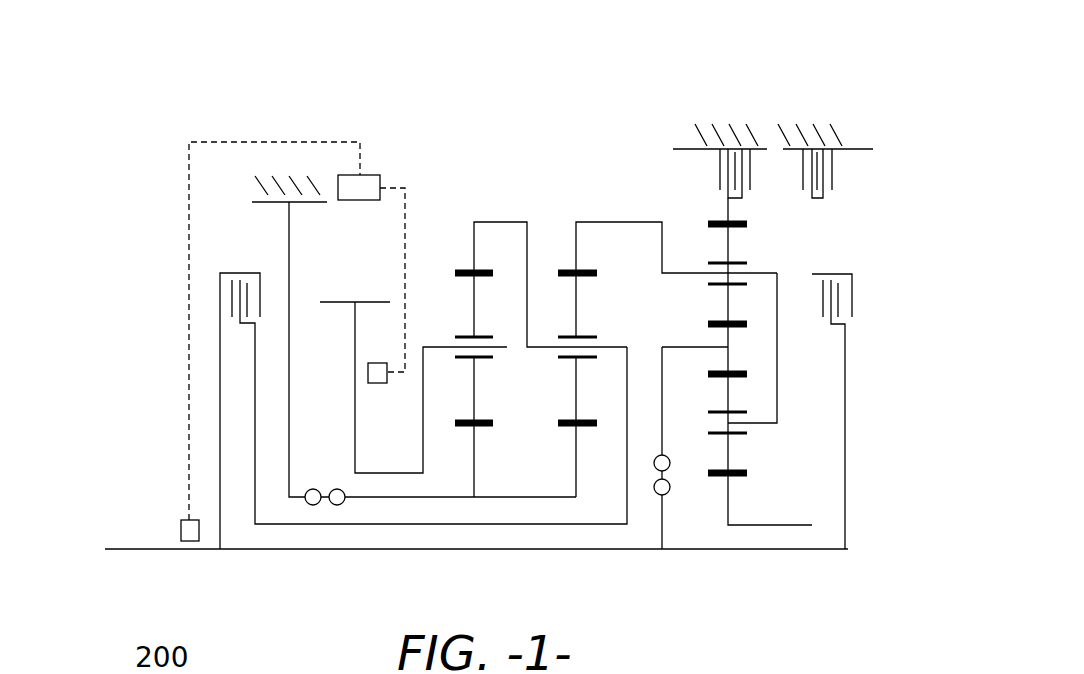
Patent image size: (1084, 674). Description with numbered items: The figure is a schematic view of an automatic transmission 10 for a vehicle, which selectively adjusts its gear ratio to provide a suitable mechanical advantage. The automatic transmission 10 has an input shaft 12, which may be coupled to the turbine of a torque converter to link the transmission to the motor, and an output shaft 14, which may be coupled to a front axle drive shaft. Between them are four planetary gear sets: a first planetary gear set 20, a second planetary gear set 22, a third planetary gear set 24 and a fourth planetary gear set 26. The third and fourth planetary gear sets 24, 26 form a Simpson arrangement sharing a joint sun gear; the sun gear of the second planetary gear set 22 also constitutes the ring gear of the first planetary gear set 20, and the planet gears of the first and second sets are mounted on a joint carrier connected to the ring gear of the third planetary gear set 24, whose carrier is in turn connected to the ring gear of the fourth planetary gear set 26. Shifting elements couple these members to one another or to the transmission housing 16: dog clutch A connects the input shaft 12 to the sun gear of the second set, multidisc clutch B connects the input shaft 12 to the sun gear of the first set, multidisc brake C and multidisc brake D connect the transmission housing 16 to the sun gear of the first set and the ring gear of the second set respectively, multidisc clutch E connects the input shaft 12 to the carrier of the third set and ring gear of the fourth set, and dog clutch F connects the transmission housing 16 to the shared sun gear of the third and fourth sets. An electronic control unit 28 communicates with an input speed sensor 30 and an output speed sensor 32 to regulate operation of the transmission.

The automatic transmission 10 is at (236, 98).
The input shaft 12 is at (133, 549).
The output shaft 14 is at (357, 437).
The transmission housing 16 is at (312, 203).
The first planetary gear set 20 is at (754, 449).
The second planetary gear set 22 is at (771, 250).
The third planetary gear set 24 is at (552, 312).
The fourth planetary gear set 26 is at (497, 377).
The electronic control unit 28 is at (373, 175).
The input speed sensor 30 is at (180, 530).
The output speed sensor 32 is at (375, 384).
The dog clutch A is at (669, 490).
The multidisc clutch B is at (833, 273).
The multidisc brake C is at (832, 184).
The multidisc brake D is at (720, 184).
The multidisc clutch E is at (252, 273).
The dog clutch or brake F is at (311, 505).